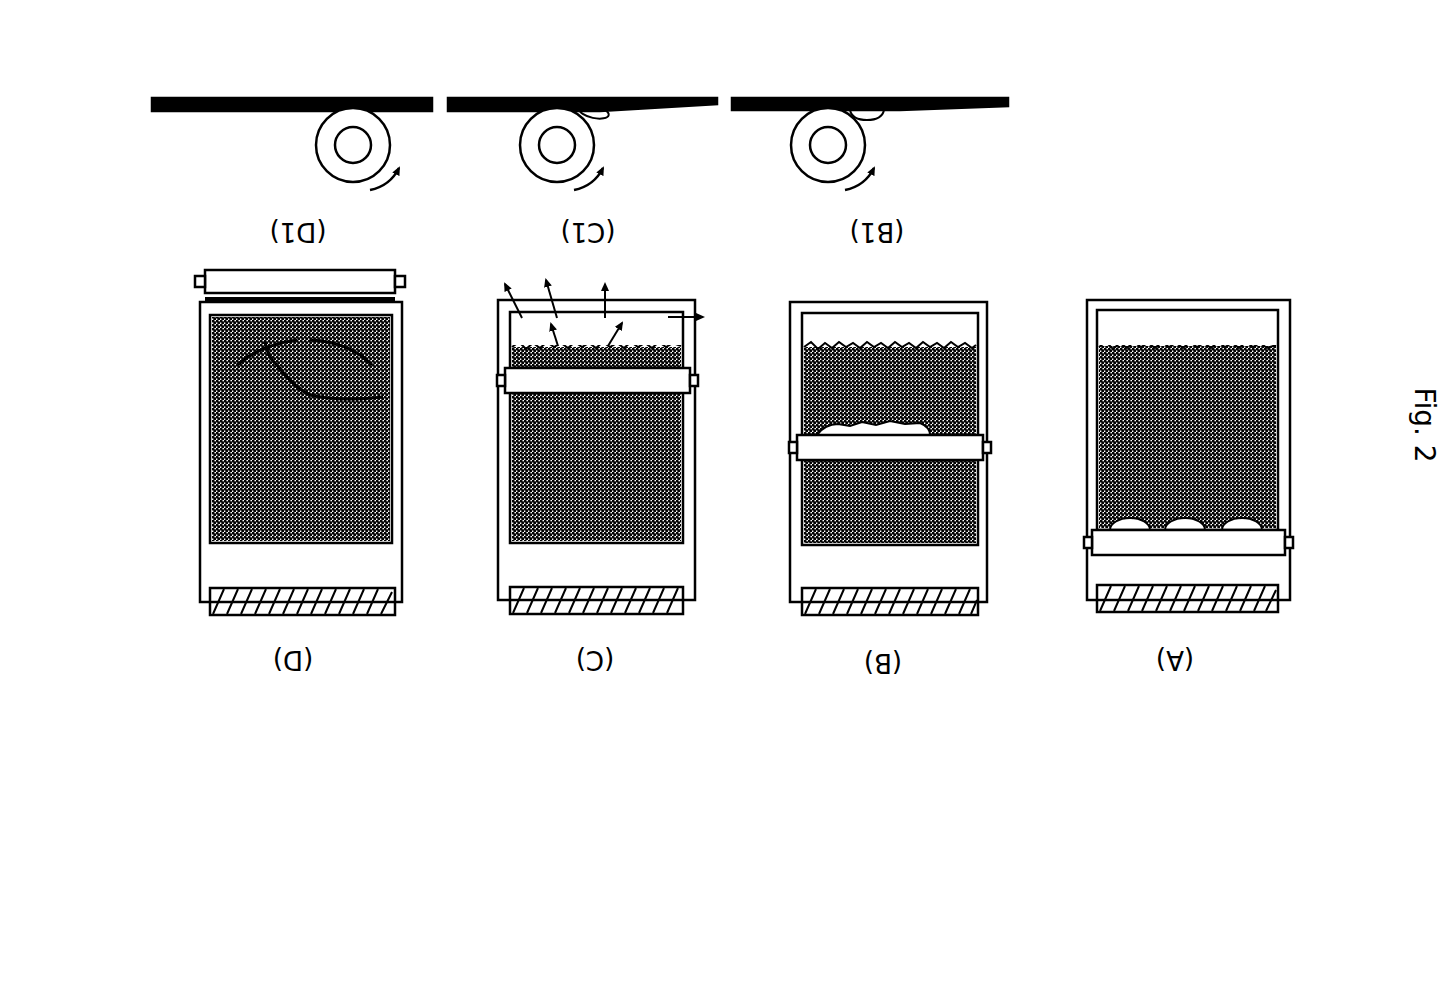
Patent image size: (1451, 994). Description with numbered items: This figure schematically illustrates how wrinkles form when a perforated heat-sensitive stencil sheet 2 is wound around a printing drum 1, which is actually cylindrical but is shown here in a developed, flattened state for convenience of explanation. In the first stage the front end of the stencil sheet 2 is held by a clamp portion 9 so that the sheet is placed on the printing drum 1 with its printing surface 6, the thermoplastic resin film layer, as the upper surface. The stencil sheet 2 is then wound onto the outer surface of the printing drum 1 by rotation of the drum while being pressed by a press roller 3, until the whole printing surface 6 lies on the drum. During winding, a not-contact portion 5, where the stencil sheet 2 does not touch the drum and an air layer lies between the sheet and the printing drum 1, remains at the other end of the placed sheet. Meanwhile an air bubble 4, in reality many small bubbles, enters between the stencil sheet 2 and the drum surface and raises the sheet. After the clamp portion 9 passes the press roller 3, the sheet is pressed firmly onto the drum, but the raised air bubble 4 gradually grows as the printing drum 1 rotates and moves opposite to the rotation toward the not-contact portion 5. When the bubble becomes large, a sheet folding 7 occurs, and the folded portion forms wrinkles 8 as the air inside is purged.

The printing drum 1 is at (1084, 398).
The stencil sheet 2 is at (1103, 572).
The press roller 3 is at (1106, 551).
The air bubble 4 is at (1185, 518).
The not-contact portion 5 is at (1125, 330).
The printing surface 6 is at (1250, 448).
The sheet folding 7 is at (606, 116).
The wrinkles 8 is at (372, 367).
The clamp portion 9 is at (237, 412).